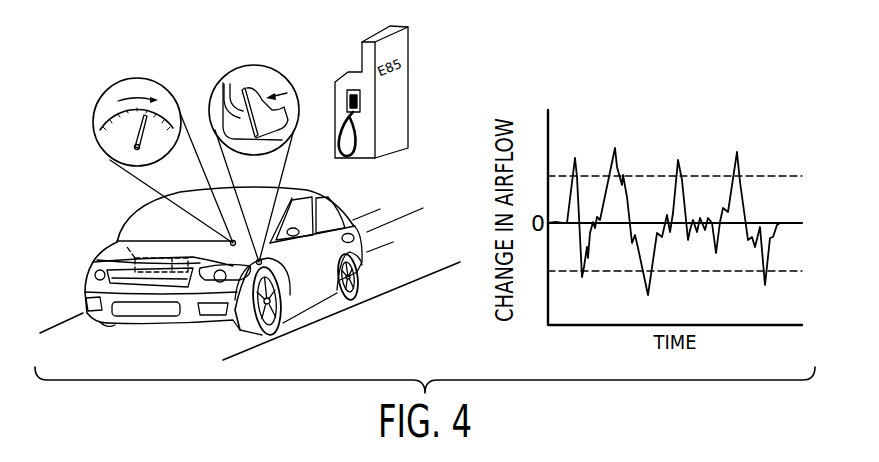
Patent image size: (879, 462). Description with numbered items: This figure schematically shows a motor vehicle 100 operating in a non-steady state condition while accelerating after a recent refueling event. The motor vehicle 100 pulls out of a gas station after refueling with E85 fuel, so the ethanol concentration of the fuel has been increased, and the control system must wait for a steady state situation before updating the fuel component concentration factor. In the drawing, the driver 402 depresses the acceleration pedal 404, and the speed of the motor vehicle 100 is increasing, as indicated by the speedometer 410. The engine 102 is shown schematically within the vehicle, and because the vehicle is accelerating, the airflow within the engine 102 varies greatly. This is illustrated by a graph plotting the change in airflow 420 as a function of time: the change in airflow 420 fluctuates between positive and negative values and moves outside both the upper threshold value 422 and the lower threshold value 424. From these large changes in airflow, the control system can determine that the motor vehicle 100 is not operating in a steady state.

The motor vehicle 100 is at (112, 228).
The engine 102 is at (188, 255).
The speedometer 410 is at (110, 117).
The acceleration pedal 404 is at (235, 95).
The driver 402 is at (252, 90).
The change in airflow 420 is at (618, 165).
The upper threshold value 422 is at (767, 175).
The lower threshold value 424 is at (777, 271).